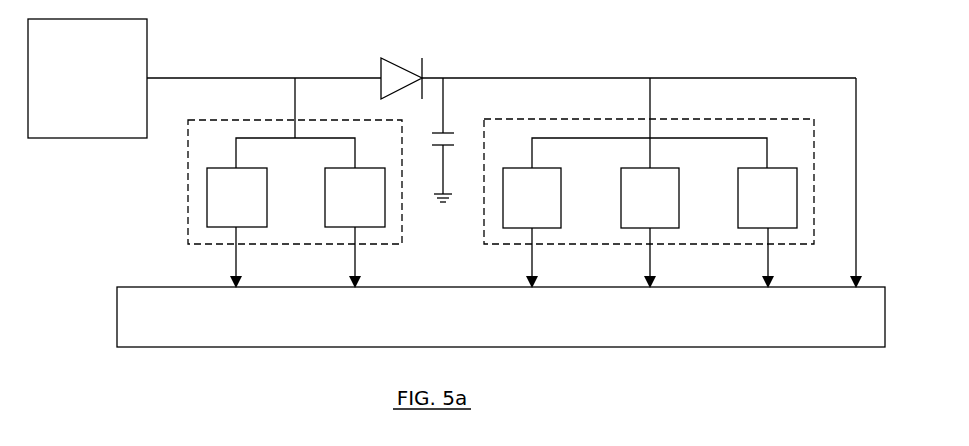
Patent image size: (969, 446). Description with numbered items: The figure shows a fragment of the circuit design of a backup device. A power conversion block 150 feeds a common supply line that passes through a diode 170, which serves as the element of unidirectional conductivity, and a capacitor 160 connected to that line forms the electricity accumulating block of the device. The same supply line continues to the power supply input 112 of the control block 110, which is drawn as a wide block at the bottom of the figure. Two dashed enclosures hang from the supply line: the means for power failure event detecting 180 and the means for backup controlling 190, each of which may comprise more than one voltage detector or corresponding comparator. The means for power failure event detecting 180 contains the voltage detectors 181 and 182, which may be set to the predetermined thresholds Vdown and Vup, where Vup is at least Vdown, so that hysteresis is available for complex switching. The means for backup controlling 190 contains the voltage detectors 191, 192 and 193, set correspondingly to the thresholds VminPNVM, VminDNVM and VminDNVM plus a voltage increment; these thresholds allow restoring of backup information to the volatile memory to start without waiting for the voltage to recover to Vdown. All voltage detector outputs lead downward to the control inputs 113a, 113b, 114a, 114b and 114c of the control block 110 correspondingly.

The control block 110 is at (501, 317).
The power supply input 112 is at (859, 284).
The control input 113a is at (233, 287).
The control input 113b is at (352, 287).
The control input 114a is at (529, 287).
The control input 114b is at (647, 287).
The control input 114c is at (765, 287).
The power conversion block 150 is at (87, 78).
The capacitor 160 is at (448, 130).
The diode 170 is at (398, 67).
The means for power failure event detecting 180 is at (188, 197).
The voltage detector 181 is at (219, 168).
The voltage detector 182 is at (375, 168).
The means for backup controlling 190 is at (815, 162).
The voltage detector 191 is at (550, 168).
The voltage detector 192 is at (660, 168).
The voltage detector 193 is at (778, 168).